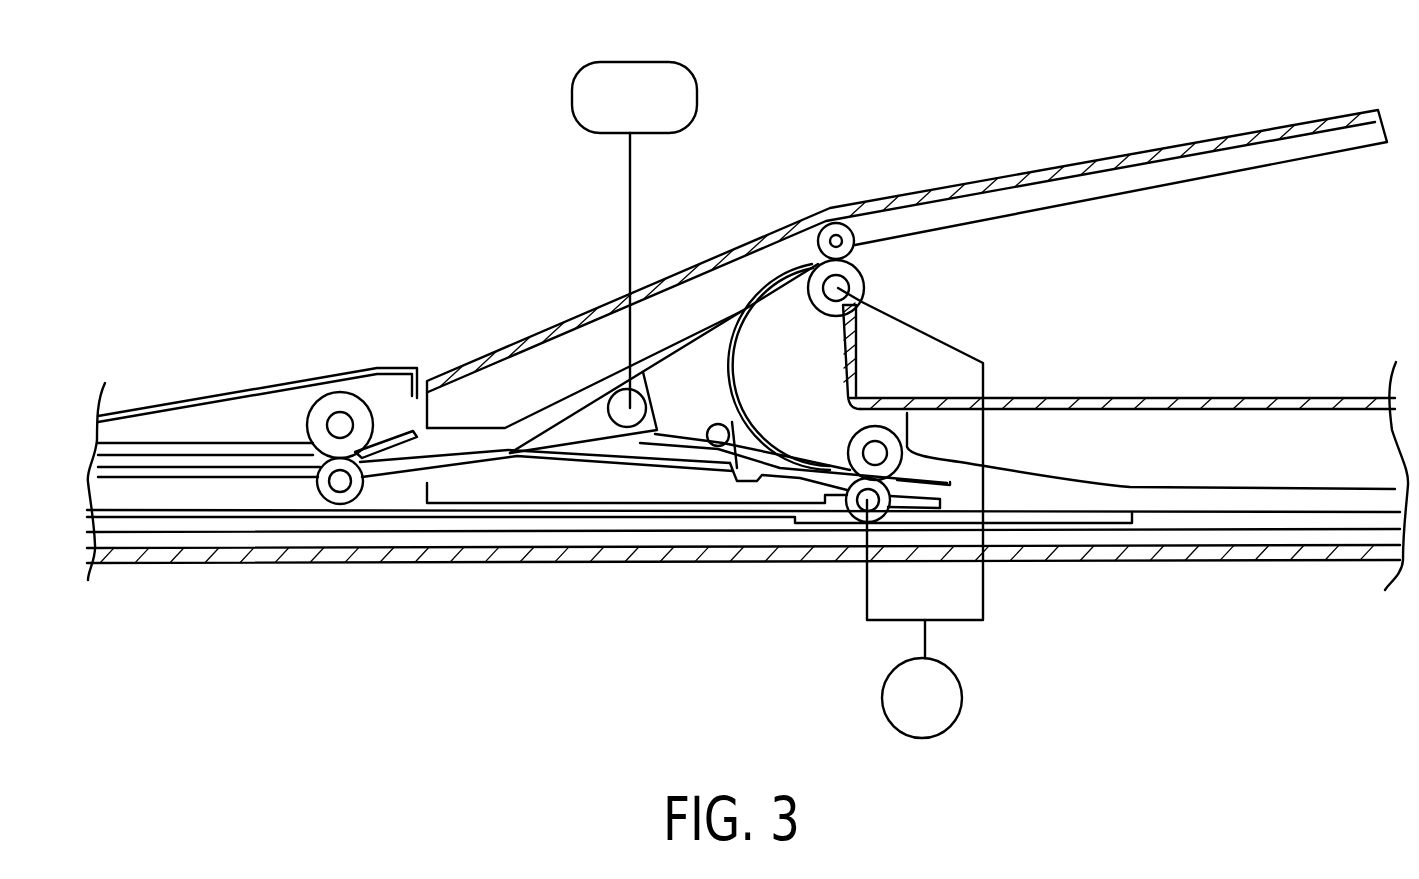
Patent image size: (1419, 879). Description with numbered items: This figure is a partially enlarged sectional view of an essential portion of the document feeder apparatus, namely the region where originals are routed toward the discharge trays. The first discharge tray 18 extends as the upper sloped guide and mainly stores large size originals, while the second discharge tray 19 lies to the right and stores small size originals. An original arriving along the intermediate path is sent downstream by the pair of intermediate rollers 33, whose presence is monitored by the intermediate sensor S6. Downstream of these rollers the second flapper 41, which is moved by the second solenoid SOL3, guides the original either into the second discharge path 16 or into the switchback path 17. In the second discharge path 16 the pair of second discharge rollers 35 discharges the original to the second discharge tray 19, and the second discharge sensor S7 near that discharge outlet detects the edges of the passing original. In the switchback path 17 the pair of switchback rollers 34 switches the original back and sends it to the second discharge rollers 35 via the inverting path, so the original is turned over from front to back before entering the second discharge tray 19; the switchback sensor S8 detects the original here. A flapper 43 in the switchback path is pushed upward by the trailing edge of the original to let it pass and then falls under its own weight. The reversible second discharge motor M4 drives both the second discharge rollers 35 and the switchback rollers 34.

The second discharge path 16 is at (602, 390).
The switchback path and inverting path 17 is at (728, 372).
The first discharge tray 18 is at (958, 186).
The second discharge tray 19 is at (1153, 397).
The pair of intermediate rollers 33 is at (340, 393).
The pair of switchback rollers 34 is at (852, 504).
The pair of second discharge rollers 35 is at (836, 241).
The second flapper 41 is at (585, 428).
The flapper 43 is at (732, 464).
The intermediate sensor S6 is at (273, 424).
The second discharge sensor S7 is at (779, 262).
The switchback sensor S8 is at (808, 437).
The second solenoid SOL3 is at (634, 235).
The second discharge motor M4 is at (922, 679).